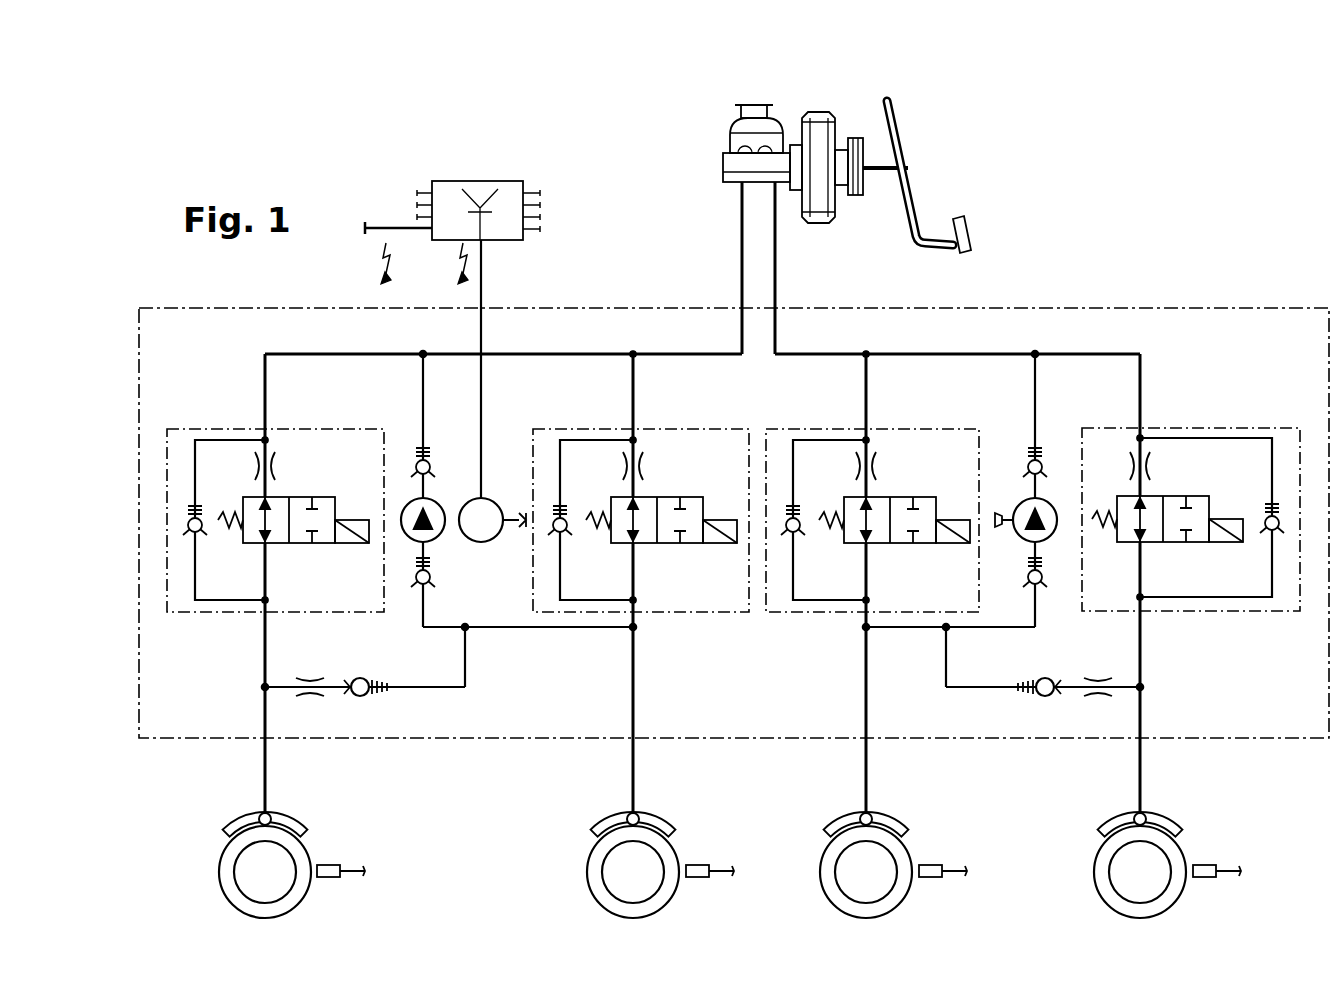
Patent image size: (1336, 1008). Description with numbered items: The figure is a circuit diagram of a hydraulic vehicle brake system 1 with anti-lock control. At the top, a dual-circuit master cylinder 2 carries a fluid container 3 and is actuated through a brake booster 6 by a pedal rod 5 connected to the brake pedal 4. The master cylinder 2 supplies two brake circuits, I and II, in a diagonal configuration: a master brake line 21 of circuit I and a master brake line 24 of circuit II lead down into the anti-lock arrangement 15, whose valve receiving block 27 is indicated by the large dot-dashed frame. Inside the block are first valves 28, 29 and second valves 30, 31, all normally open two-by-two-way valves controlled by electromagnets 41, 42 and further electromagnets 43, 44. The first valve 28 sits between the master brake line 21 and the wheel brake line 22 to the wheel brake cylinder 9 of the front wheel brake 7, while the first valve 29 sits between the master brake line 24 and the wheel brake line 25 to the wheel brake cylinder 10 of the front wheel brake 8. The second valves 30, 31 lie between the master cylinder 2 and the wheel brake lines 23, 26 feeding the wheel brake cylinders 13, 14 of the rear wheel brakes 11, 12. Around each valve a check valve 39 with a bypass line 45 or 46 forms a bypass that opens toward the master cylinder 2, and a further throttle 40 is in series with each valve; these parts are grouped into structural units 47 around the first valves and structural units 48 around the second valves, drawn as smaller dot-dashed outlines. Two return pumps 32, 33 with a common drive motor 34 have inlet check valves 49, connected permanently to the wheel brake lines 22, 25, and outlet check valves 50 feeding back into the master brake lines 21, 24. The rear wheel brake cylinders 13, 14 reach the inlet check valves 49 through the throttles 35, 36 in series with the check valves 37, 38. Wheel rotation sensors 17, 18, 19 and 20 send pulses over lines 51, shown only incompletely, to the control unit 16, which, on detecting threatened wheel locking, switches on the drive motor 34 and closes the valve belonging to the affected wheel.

The hydraulic vehicle brake system 1 is at (612, 232).
The master cylinder 2 is at (723, 165).
The fluid container 3 is at (730, 128).
The brake pedal 4 is at (960, 216).
The pedal rod 5 is at (878, 160).
The brake booster 6 is at (820, 112).
The front wheel brake 7 is at (826, 872).
The front wheel brake 8 is at (594, 872).
The wheel brake cylinder 9 is at (851, 828).
The wheel brake cylinder 10 is at (618, 828).
The rear wheel brake 11 is at (1100, 872).
The rear wheel brake 12 is at (226, 872).
The wheel brake cylinder 13 is at (1156, 828).
The wheel brake cylinder 14 is at (250, 828).
The anti-lock arrangement 15 is at (1053, 282).
The control unit 16 is at (452, 188).
The wheel rotation sensor 17 is at (932, 865).
The wheel rotation sensor 18 is at (700, 865).
The wheel rotation sensor 19 is at (1210, 865).
The wheel rotation sensor 20 is at (336, 865).
The master brake line 21 is at (775, 270).
The wheel brake line 22 is at (866, 766).
The wheel brake line 23 is at (1141, 766).
The master brake line 24 is at (742, 270).
The wheel brake line 25 is at (633, 766).
The wheel brake line 26 is at (265, 766).
The valve receiving block 27 is at (1150, 308).
The first valve 28 is at (880, 497).
The first valve 29 is at (648, 497).
The second valve 30 is at (1152, 497).
The second valve 31 is at (247, 497).
The return pump 32 is at (1020, 535).
The return pump 33 is at (440, 512).
The drive motor 34 is at (488, 500).
The throttle 35 is at (1092, 700).
The throttle 36 is at (318, 700).
The check valve 37 is at (1038, 678).
The check valve 38 is at (355, 678).
The check valve 39 is at (203, 530).
The throttle 40 is at (276, 462).
The electromagnet 41 is at (955, 520).
The electromagnet 42 is at (720, 520).
The electromagnet 43 is at (1236, 519).
The electromagnet 44 is at (356, 520).
The bypass line 45 is at (618, 603).
The bypass line 46 is at (580, 440).
The structural unit 47 is at (720, 613).
The structural unit 48 is at (246, 613).
The inlet check valve 49 is at (420, 586).
The outlet check valve 50 is at (412, 462).
The line 51 is at (378, 228).